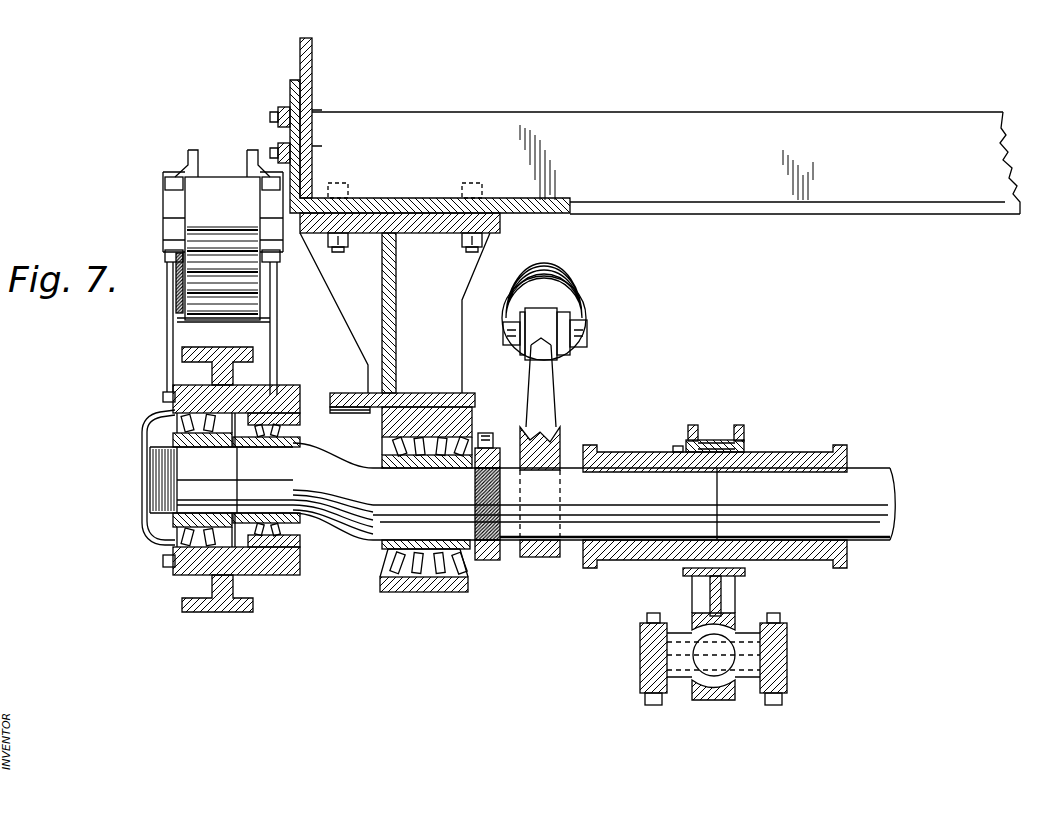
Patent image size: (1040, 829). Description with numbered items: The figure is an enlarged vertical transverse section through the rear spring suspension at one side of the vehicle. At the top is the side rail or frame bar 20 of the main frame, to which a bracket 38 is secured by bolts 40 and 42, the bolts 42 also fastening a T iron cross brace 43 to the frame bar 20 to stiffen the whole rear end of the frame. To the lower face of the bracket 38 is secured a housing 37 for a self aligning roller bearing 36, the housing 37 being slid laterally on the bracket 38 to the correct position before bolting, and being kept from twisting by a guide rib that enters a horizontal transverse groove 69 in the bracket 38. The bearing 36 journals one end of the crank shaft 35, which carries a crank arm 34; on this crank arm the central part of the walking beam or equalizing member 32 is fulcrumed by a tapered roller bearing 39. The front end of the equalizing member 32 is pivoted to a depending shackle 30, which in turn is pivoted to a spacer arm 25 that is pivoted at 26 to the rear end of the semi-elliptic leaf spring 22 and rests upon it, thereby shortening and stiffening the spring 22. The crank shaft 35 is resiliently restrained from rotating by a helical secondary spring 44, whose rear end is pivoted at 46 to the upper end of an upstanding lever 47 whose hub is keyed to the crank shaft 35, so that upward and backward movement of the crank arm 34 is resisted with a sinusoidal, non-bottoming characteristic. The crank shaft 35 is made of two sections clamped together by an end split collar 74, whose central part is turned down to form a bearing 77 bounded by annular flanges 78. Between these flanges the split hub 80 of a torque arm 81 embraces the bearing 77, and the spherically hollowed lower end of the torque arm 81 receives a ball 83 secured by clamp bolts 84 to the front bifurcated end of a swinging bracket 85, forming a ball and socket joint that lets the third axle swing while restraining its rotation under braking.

The side rail or frame bar 20 is at (300, 46).
The bolts 40 is at (282, 143).
The T iron cross brace 43 is at (950, 114).
The bolts 42 is at (470, 183).
The bracket 38 is at (338, 300).
The groove 69 is at (330, 412).
The housing 37 is at (437, 593).
The self aligning roller bearings 36 is at (420, 592).
The crank shaft 35 is at (872, 478).
The crank arm 34 is at (150, 480).
The walking beam or equalizing lever or member 32 is at (178, 360).
The tapered roller bearing 39 is at (172, 414).
The semi-elliptic leaf spring 22 is at (178, 300).
The spacer arm 25 is at (252, 151).
The pivot (rear spring eye) 26 is at (185, 218).
The link or shackle 30 is at (183, 326).
The helical secondary spring 44 is at (562, 265).
The pivot 46 is at (589, 333).
The upstanding lever 47 is at (540, 393).
The end split collar 74 is at (800, 452).
The annular flanges 78 is at (678, 444).
The split hub 80 is at (708, 440).
The bearing 77 is at (717, 440).
The torque arm 81 is at (742, 425).
The ball 83 is at (713, 655).
The clamp bolts 84 is at (648, 706).
The swinging bracket 85 is at (640, 681).